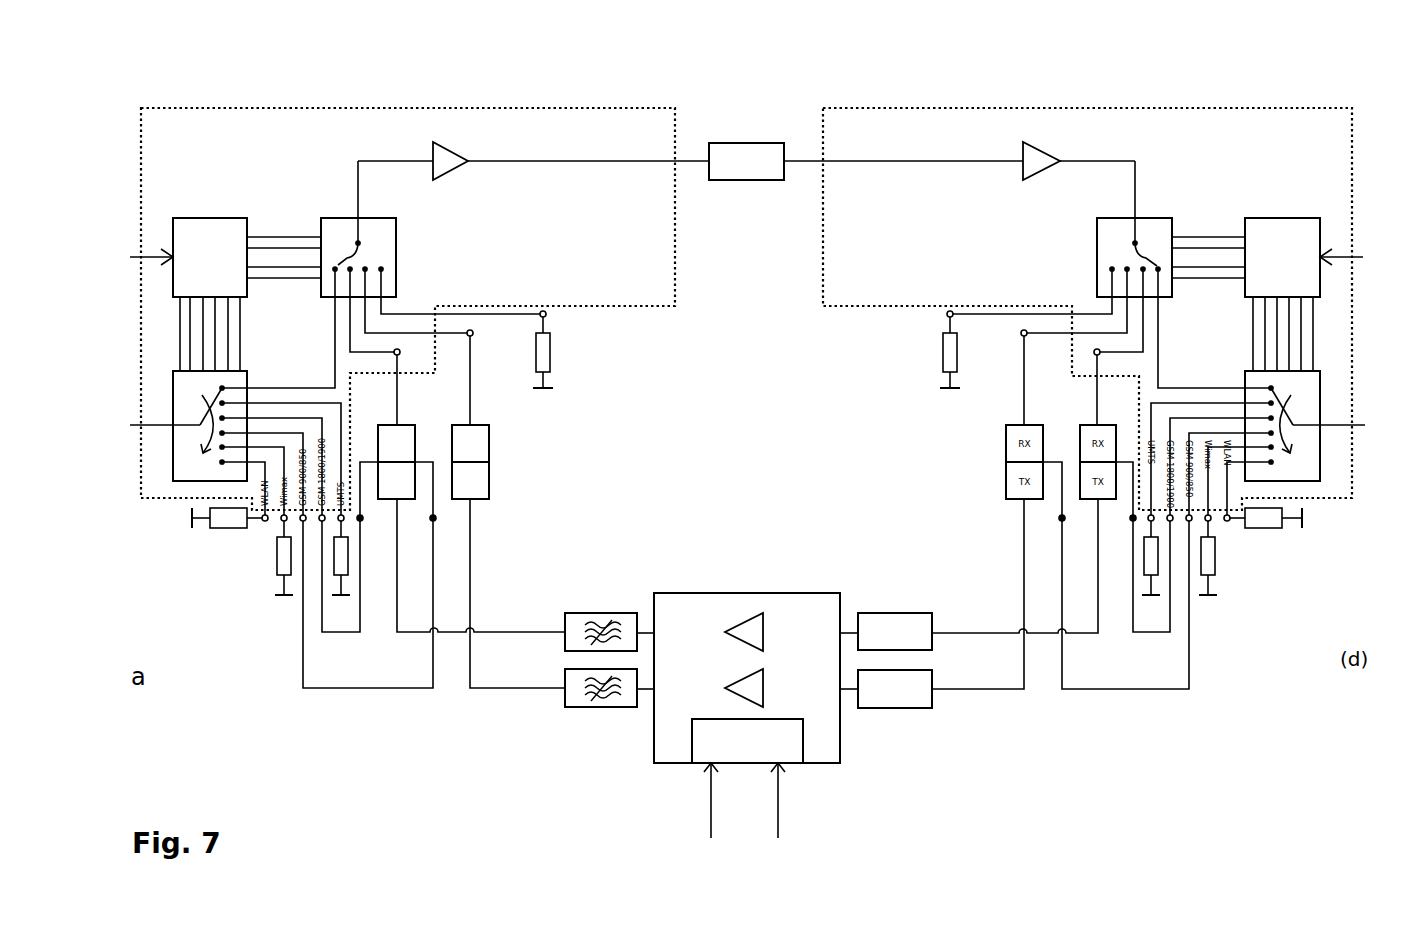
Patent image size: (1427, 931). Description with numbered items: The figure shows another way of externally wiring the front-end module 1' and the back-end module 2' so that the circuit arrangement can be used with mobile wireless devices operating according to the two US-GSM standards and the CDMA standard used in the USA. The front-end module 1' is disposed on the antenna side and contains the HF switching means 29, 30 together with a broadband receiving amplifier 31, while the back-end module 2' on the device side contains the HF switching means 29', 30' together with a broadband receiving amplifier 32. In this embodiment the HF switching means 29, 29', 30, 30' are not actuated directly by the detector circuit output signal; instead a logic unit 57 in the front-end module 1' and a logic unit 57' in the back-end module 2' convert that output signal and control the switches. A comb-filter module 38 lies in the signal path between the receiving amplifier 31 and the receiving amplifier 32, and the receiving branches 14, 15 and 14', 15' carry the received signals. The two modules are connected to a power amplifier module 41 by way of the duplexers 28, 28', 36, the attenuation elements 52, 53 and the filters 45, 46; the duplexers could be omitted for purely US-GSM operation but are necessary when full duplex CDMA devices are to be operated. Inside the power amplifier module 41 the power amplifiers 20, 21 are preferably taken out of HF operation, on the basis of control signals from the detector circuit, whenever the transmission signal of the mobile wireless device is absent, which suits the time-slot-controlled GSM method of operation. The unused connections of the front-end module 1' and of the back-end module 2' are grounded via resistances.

The front-end module 1' is at (408, 309).
The back-end module 2' is at (1087, 309).
The receiving branch 14 is at (471, 507).
The receiving branch 15 is at (508, 518).
The receiving branch 14' is at (702, 108).
The receiving branch 15' is at (297, 341).
The power amplifier 20 is at (745, 637).
The power amplifier 21 is at (747, 693).
The duplexer 28 is at (372, 625).
The duplexer 28' is at (1128, 625).
The HF switching means 29 is at (188, 493).
The HF switching means 29' is at (1322, 482).
The HF switching means 30 is at (337, 176).
The HF switching means 30' is at (1173, 168).
The receiving amplifier 31 is at (434, 150).
The receiving amplifier 32 is at (1028, 157).
The duplexer 36 is at (491, 473).
The comb-filter module 38 is at (732, 176).
The power amplifier module 41 is at (706, 615).
The harmonic filter 45 is at (567, 617).
The harmonic filter 46 is at (567, 700).
The attenuation element 52 is at (881, 646).
The attenuation element 53 is at (881, 703).
The logic unit 57 is at (225, 294).
The logic unit 57' is at (1267, 294).